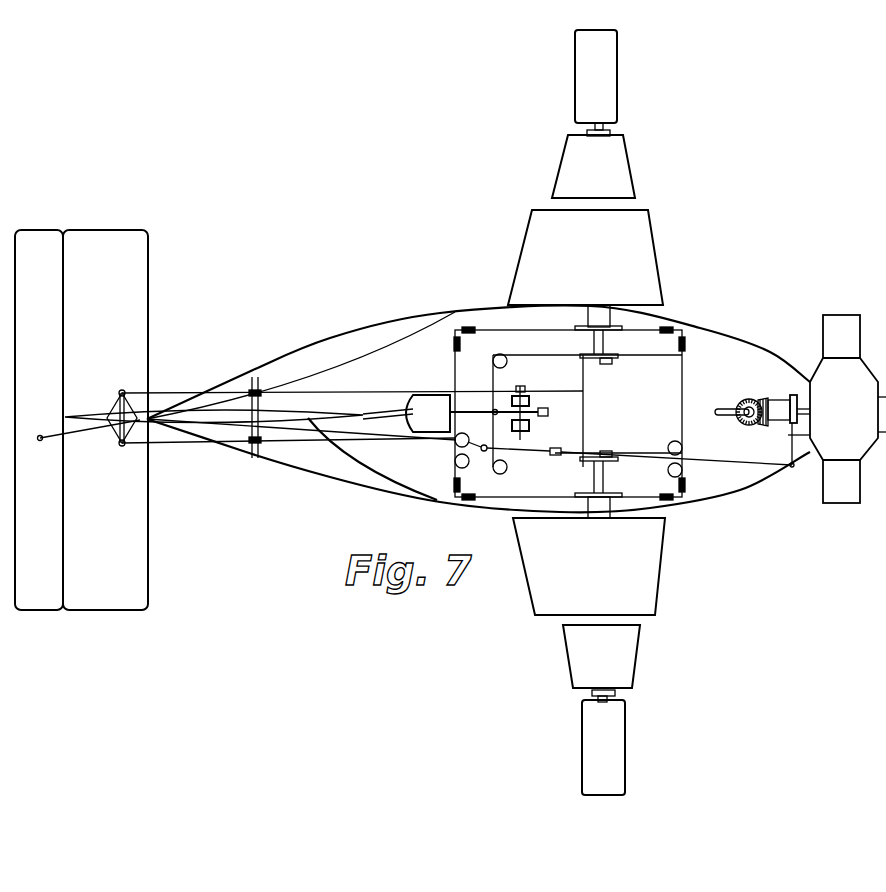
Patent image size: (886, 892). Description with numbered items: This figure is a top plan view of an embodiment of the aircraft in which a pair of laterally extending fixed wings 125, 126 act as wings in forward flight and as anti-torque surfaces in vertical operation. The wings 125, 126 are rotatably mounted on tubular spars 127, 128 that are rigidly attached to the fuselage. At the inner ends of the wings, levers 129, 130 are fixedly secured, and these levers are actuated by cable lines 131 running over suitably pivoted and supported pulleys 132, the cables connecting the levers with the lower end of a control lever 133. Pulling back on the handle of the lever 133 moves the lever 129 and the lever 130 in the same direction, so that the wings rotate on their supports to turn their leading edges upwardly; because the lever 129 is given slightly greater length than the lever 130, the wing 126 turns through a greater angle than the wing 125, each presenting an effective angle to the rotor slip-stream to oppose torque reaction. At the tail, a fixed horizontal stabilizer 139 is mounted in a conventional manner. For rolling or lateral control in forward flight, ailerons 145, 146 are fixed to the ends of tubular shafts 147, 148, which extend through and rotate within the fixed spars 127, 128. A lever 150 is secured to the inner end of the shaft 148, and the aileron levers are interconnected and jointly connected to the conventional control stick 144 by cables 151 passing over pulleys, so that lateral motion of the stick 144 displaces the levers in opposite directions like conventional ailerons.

The fixed wing 125 is at (625, 238).
The fixed wing 126 is at (640, 582).
The tubular spar 127 is at (600, 317).
The tubular spar 128 is at (603, 506).
The lever 129 is at (620, 333).
The lever 130 is at (622, 487).
The cable lines 131 is at (455, 370).
The pulleys 132 is at (468, 327).
The control lever 133 is at (484, 451).
The fixed horizontal stabilizer 139 is at (118, 570).
The control stick 144 is at (497, 410).
The aileron 145 is at (605, 106).
The aileron 146 is at (612, 778).
The tubular shaft 147 is at (610, 128).
The tubular shaft 148 is at (612, 695).
The lever 150 is at (618, 459).
The cables 151 is at (563, 362).